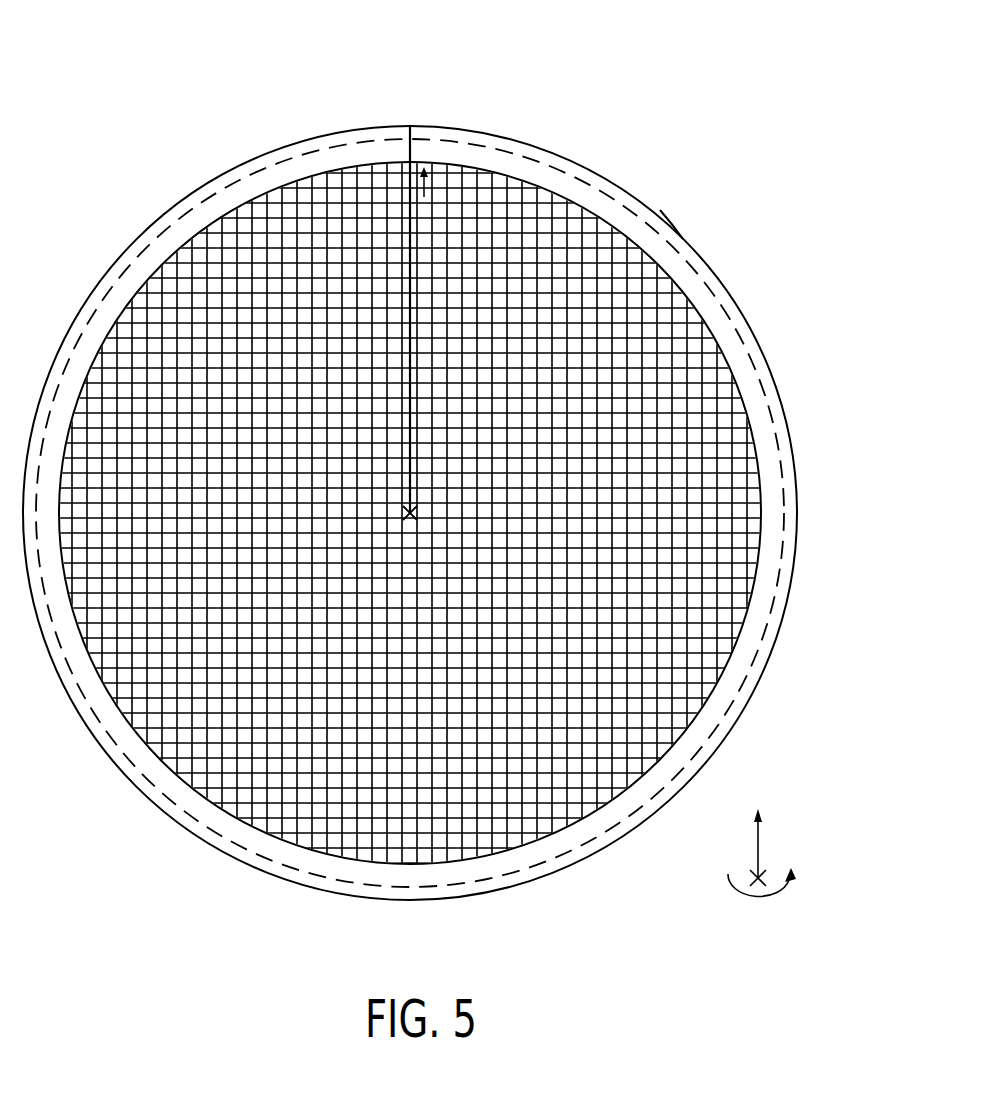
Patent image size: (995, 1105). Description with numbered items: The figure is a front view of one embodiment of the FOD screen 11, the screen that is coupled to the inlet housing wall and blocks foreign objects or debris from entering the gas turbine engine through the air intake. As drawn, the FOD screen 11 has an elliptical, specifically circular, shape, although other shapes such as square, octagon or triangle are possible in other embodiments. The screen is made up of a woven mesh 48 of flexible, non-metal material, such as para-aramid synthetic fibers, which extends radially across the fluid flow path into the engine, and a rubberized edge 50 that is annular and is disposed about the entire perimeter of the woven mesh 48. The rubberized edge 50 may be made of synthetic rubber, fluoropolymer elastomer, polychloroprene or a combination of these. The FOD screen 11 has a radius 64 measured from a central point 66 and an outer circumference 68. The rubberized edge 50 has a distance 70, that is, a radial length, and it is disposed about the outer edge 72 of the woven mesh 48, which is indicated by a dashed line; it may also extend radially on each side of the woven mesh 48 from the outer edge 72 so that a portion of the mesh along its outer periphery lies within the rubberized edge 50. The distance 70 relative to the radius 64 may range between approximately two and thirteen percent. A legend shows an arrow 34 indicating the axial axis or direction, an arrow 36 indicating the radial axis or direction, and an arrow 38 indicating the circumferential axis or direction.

The FOD screen 11 is at (126, 185).
The arrow indicating axial axis or direction 34 is at (752, 873).
The arrow indicating radial axis or direction 36 is at (759, 853).
The arrow indicating circumferential axis or direction 38 is at (757, 901).
The woven mesh 48 is at (582, 220).
The rubberized edge 50 is at (543, 172).
The radius 64 is at (410, 225).
The central point 66 is at (417, 518).
The outer circumference 68 is at (683, 240).
The distance 70 is at (423, 117).
The outer edge 72 is at (505, 152).